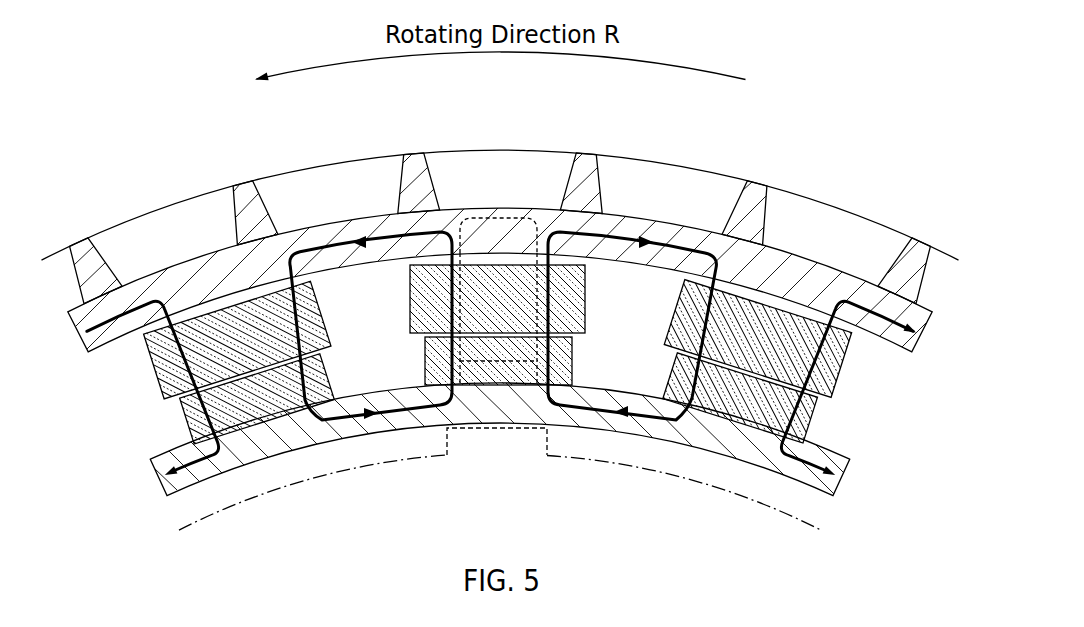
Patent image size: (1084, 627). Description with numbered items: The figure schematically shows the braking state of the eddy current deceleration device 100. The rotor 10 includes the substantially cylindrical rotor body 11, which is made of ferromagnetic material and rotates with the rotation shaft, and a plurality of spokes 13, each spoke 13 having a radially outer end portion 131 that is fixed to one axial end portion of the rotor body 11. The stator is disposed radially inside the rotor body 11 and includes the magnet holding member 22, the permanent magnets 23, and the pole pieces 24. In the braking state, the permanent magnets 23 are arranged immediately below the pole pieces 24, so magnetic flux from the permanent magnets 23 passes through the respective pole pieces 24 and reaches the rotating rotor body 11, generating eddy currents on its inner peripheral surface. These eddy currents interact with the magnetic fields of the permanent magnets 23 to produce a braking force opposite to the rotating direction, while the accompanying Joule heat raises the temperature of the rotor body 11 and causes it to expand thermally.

The deceleration device 100 is at (867, 88).
The rotor 10 is at (140, 196).
The rotor body 11 is at (332, 222).
The spoke 13 is at (474, 206).
The end portion 131 is at (521, 222).
The magnet holding member 22 is at (203, 488).
The permanent magnet 23 is at (291, 413).
The pole piece 24 is at (240, 318).